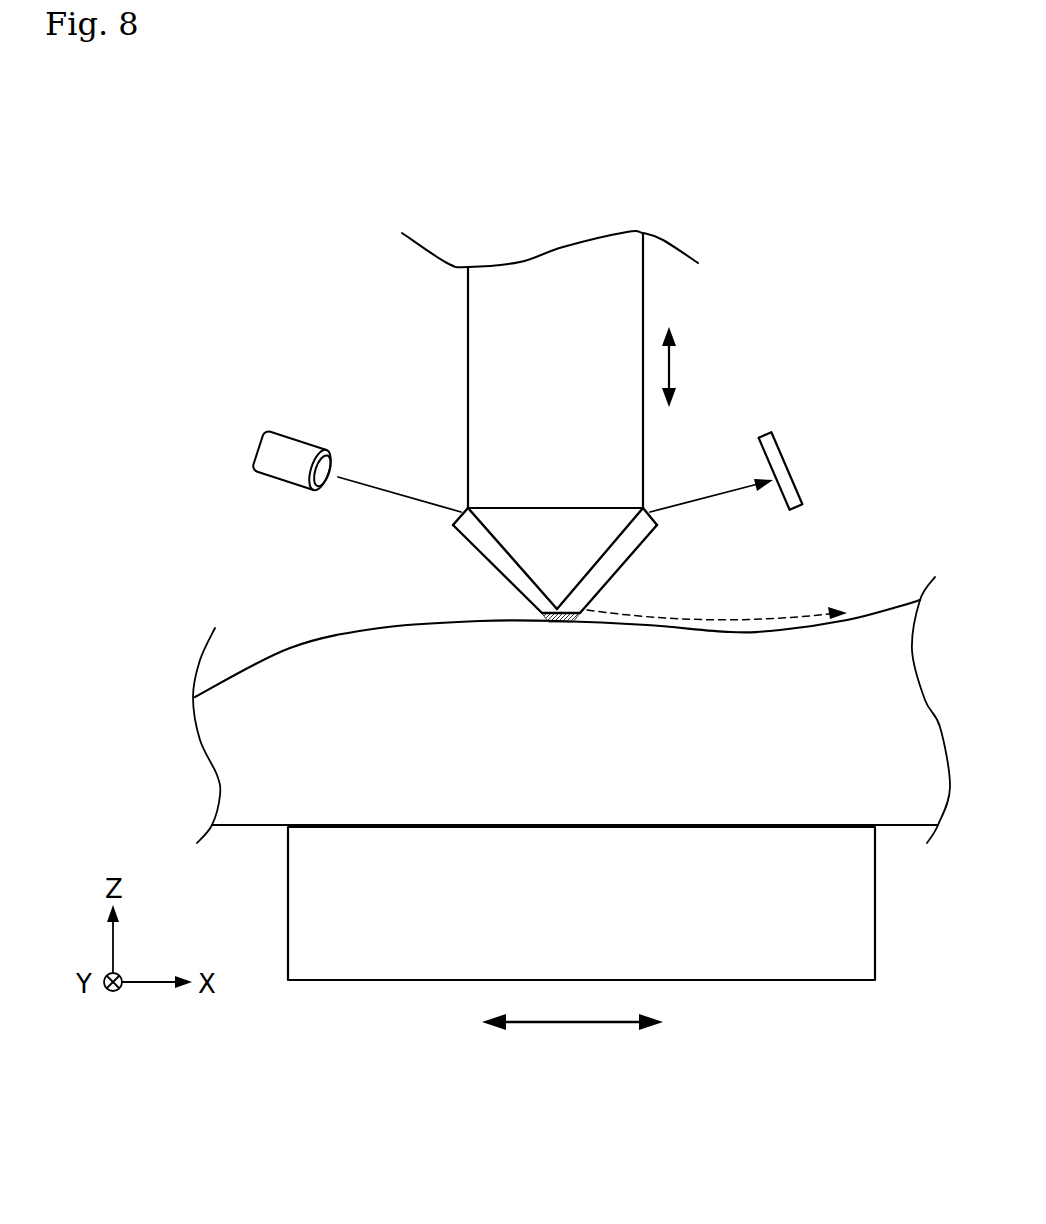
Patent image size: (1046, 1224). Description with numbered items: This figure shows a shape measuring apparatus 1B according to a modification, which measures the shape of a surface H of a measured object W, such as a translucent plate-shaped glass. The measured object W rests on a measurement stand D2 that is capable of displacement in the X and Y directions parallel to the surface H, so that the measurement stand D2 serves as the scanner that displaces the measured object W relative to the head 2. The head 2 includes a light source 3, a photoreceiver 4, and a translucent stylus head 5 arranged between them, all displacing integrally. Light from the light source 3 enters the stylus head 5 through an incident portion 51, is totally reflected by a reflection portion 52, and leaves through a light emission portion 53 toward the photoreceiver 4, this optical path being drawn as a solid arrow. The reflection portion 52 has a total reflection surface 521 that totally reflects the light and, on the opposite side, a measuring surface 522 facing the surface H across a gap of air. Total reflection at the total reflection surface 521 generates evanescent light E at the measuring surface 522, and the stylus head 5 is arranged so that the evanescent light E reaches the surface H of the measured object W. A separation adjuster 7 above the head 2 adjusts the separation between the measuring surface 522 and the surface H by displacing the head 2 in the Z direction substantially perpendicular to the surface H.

The shape measuring apparatus 1B is at (810, 260).
The separation adjuster 7 is at (643, 305).
The head 2 is at (533, 424).
The light source 3 is at (292, 433).
The photoreceiver 4 is at (773, 433).
The stylus head 5 is at (447, 546).
The incident portion 51 is at (463, 508).
The light emission portion 53 is at (647, 510).
The reflection portion 52 is at (566, 560).
The total reflection surface 521 is at (538, 604).
The measuring surface 522 is at (587, 612).
The measured object W is at (209, 588).
The surface H is at (290, 648).
The evanescent light E is at (553, 622).
The measurement stand D2 is at (860, 932).